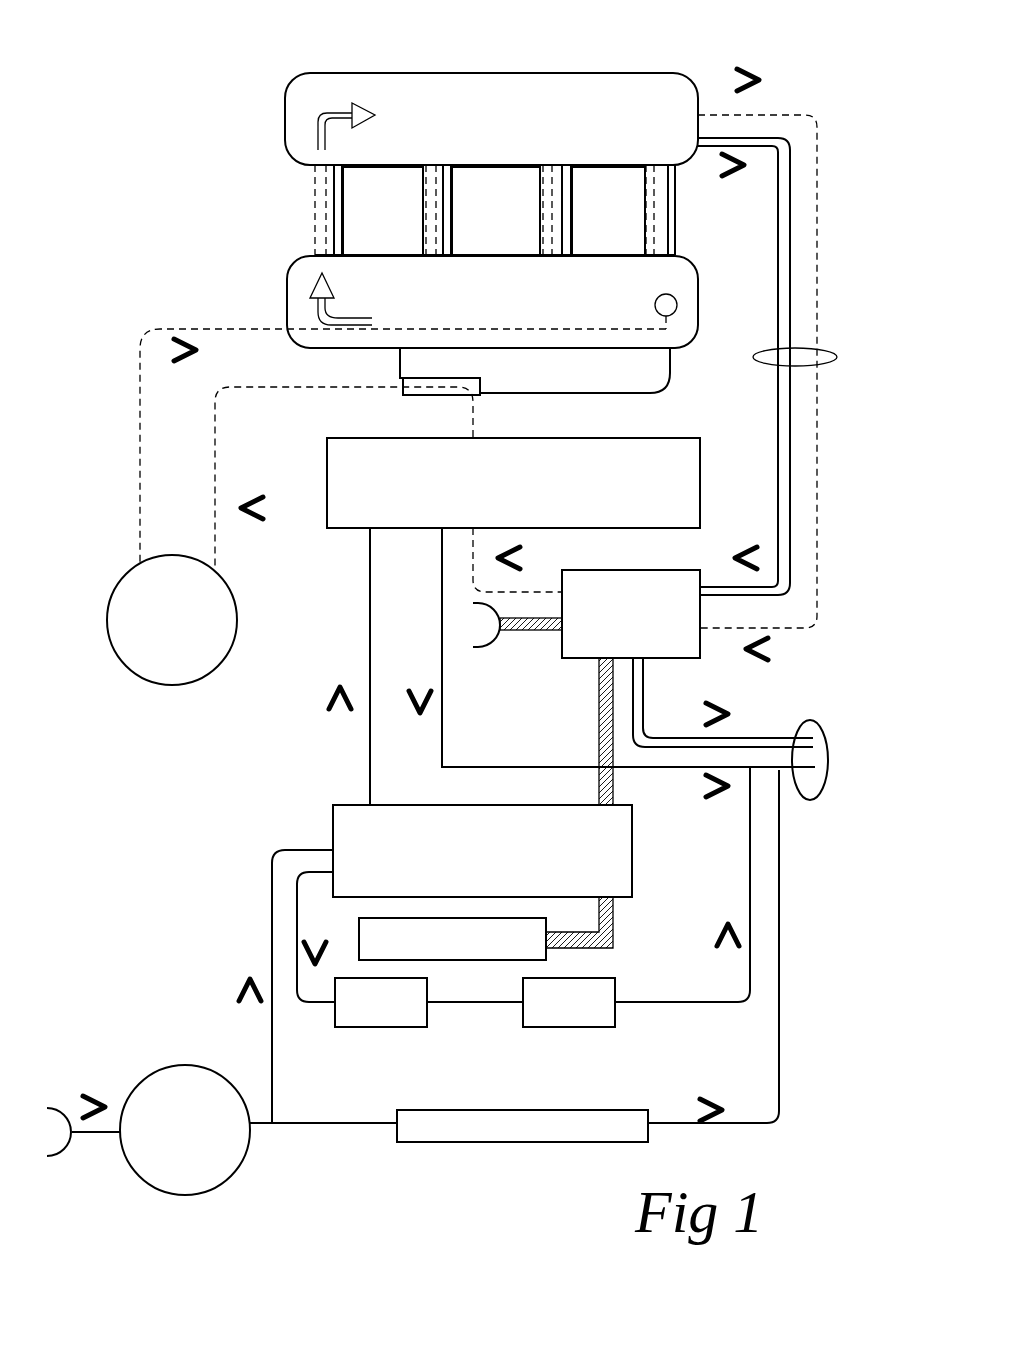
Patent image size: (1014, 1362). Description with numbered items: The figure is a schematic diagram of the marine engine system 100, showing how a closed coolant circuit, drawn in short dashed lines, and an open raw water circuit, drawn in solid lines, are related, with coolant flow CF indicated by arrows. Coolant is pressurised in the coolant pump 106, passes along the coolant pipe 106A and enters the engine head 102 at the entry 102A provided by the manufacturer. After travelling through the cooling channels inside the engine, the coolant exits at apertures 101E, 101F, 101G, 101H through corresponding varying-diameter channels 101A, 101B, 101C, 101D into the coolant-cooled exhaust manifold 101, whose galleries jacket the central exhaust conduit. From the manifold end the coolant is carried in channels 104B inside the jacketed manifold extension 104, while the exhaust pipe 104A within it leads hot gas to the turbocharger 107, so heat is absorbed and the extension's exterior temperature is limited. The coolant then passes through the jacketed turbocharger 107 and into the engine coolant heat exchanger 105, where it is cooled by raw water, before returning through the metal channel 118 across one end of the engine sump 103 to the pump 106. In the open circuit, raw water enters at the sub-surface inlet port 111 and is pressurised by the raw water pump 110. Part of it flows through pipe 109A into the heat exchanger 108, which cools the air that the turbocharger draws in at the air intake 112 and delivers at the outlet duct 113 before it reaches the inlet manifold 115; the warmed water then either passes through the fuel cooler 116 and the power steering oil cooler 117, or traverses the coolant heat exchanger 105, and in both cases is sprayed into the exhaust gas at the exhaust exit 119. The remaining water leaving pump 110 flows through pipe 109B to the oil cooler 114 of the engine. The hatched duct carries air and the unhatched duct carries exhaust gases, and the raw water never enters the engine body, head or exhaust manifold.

The cooling system 100 is at (178, 72).
The coolant flow CF is at (362, 100).
The coolant-cooled exhaust manifold 101 is at (512, 124).
The coolant connection 101A is at (318, 186).
The coolant connection 101B is at (427, 219).
The coolant connection 101C is at (545, 221).
The coolant connection 101D is at (648, 218).
The coolant connection from inside the engine 101E is at (318, 241).
The coolant connection from inside the engine 101F is at (436, 256).
The coolant connection from inside the engine 101G is at (552, 258).
The coolant connection from inside the engine 101H is at (650, 258).
The engine head 102 is at (496, 300).
The entry into engine of coolant from pump 102A is at (655, 305).
The engine sump 103 is at (584, 385).
The jacketed manifold extension 104 is at (772, 362).
The exhaust pipe within manifold extension 104A is at (778, 195).
The coolant channels within manifold extension 104B is at (818, 430).
The engine coolant heat exchanger 105 is at (519, 491).
The coolant pump 106 is at (187, 638).
The coolant pipe 106A is at (240, 326).
The turbocharger 107 is at (642, 626).
The heat exchanger for compressed air 108 is at (526, 863).
The water pipe to exchangers 109A is at (272, 898).
The water pipe to oil cooler 109B is at (300, 1123).
The raw water pump 110 is at (197, 1148).
The sub-surface water inlet port 111 is at (50, 1105).
The air intake 112 is at (492, 648).
The air exit from turbocharger compressor 113 is at (599, 756).
The oil cooler 114 is at (524, 1138).
The inlet manifold 115 is at (467, 951).
The fuel cooler 116 is at (394, 1018).
The power steering oil cooler 117 is at (582, 1018).
The return coolant channel 118 is at (405, 394).
The exhaust with water spray 119 is at (810, 800).